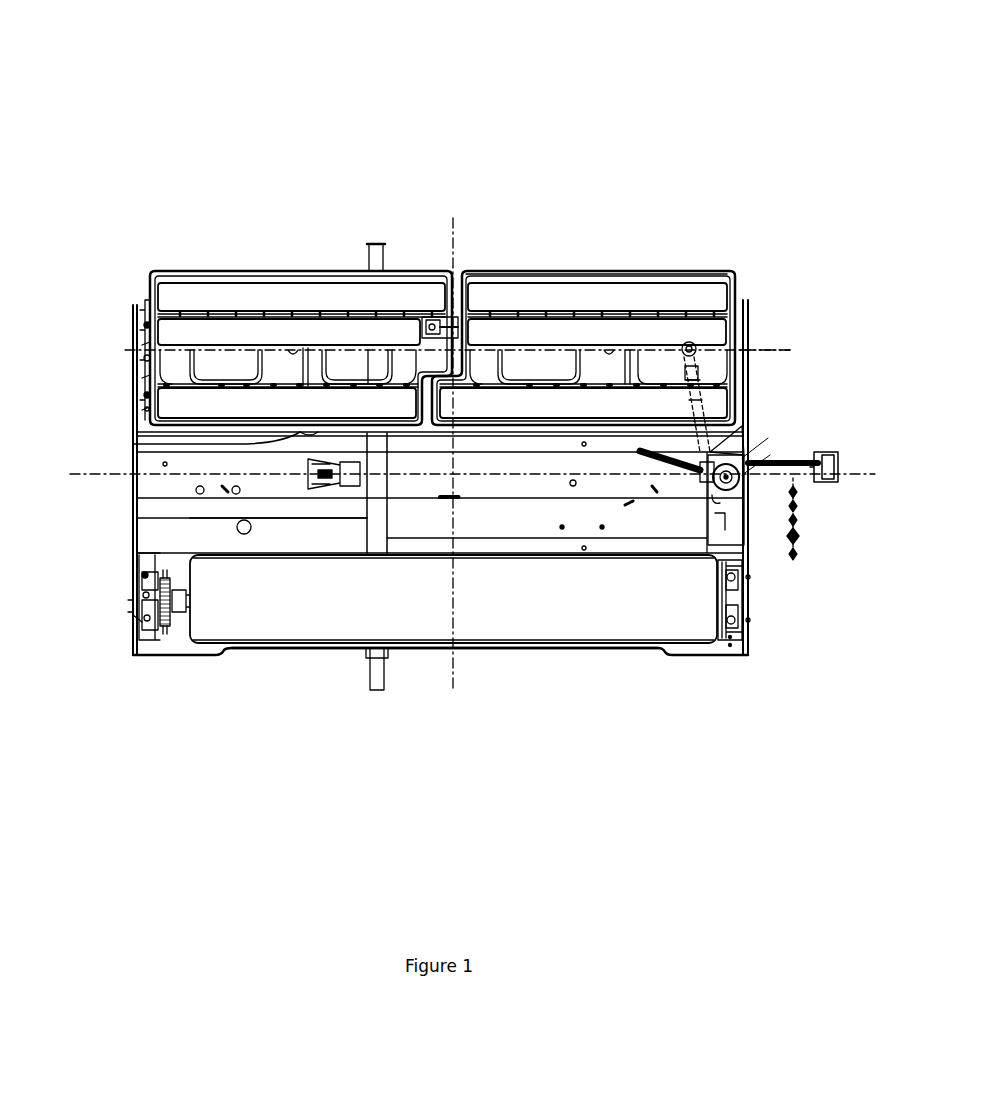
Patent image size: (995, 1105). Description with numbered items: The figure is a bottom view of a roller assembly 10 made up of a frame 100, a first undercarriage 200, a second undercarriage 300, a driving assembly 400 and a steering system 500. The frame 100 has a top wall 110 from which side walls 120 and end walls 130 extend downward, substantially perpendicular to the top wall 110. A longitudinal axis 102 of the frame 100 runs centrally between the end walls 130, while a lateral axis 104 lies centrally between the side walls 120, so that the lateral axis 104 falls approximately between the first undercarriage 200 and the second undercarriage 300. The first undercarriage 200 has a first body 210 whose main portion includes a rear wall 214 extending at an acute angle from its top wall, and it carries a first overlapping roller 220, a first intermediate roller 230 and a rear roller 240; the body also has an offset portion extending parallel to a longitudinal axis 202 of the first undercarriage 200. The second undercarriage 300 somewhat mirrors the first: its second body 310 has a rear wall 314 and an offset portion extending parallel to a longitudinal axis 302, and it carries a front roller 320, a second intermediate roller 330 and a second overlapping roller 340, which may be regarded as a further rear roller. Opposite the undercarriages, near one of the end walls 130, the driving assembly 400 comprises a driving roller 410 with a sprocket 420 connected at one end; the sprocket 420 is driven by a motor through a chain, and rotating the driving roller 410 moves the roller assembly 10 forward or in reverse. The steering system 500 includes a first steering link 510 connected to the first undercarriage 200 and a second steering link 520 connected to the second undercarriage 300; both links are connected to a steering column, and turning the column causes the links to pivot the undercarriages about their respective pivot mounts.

The roller assembly 10 is at (746, 84).
The frame 100 is at (698, 728).
The longitudinal axis 102 is at (103, 484).
The lateral axis 104 is at (454, 241).
The top wall 110 is at (521, 521).
The side walls 120 is at (130, 625).
The end walls 130 is at (148, 304).
The first undercarriage 200 is at (724, 176).
The longitudinal axis 202 is at (787, 350).
The first body 210 is at (697, 246).
The rear wall 214 is at (592, 272).
The first overlapping roller 220 is at (722, 400).
The first intermediate roller 230 is at (720, 333).
The rear roller 240 is at (710, 298).
The second undercarriage 300 is at (285, 176).
The longitudinal axis 302 is at (124, 349).
The second body 310 is at (285, 241).
The rear wall 314 is at (340, 268).
The front roller 320 is at (172, 398).
The second intermediate roller 330 is at (170, 327).
The second overlapping roller 340 is at (203, 288).
The driving assembly 400 is at (488, 712).
The driving roller 410 is at (520, 618).
The sprocket 420 is at (172, 630).
The steering system 500 is at (820, 392).
The first steering link 510 is at (696, 370).
The second steering link 520 is at (133, 443).